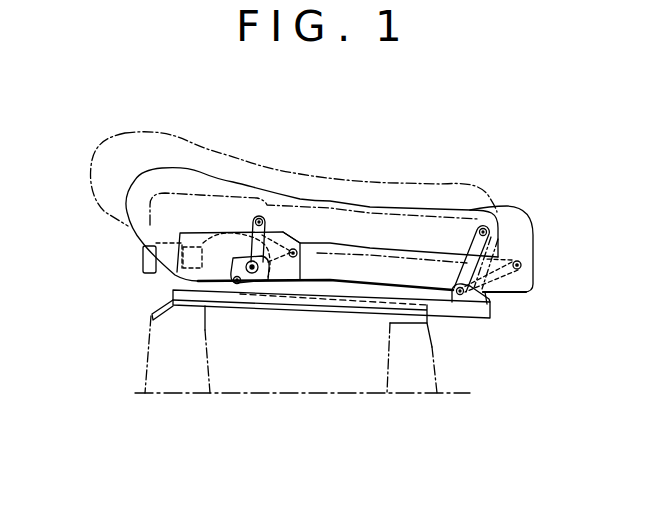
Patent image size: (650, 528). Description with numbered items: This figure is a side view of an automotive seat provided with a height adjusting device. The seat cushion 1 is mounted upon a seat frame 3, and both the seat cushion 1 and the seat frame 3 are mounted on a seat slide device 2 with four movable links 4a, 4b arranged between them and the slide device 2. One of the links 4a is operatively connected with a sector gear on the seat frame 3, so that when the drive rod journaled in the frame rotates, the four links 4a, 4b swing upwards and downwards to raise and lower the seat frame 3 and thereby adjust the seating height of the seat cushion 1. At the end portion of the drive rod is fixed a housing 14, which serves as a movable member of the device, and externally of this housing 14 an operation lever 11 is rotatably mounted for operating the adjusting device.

The seat cushion 1 is at (349, 182).
The seat slide device 2 is at (177, 291).
The seat frame 3 is at (512, 293).
The movable link 4a is at (293, 248).
The movable link 4b is at (521, 267).
The operation lever 11 is at (143, 257).
The housing 14 is at (228, 231).